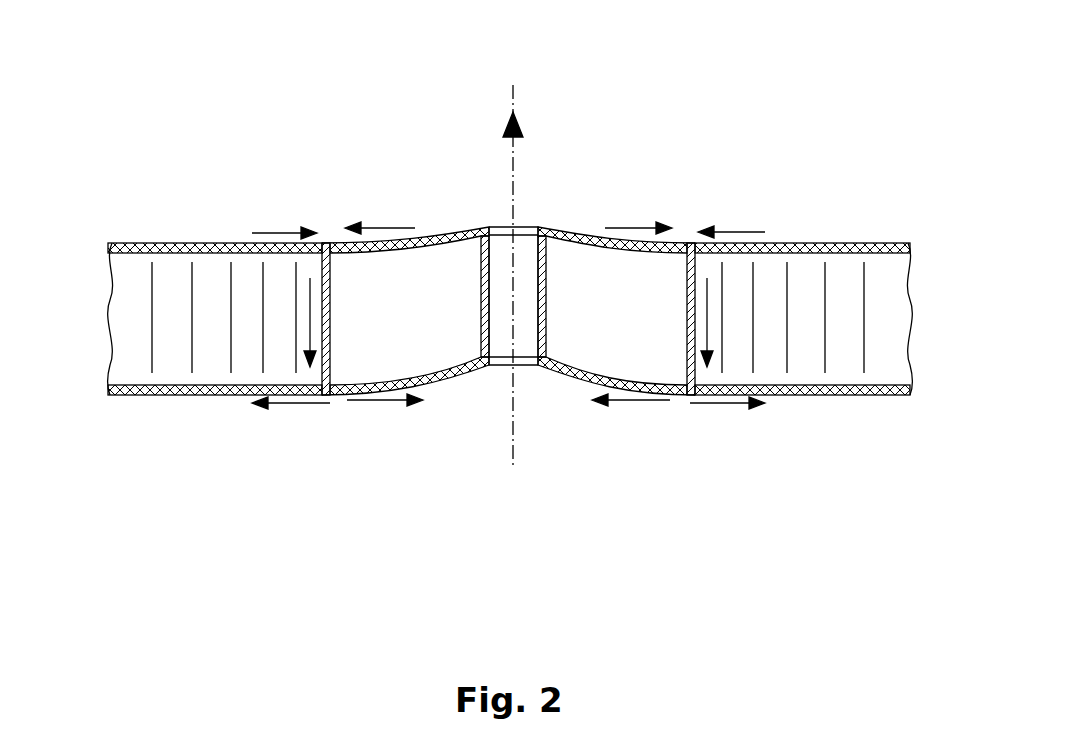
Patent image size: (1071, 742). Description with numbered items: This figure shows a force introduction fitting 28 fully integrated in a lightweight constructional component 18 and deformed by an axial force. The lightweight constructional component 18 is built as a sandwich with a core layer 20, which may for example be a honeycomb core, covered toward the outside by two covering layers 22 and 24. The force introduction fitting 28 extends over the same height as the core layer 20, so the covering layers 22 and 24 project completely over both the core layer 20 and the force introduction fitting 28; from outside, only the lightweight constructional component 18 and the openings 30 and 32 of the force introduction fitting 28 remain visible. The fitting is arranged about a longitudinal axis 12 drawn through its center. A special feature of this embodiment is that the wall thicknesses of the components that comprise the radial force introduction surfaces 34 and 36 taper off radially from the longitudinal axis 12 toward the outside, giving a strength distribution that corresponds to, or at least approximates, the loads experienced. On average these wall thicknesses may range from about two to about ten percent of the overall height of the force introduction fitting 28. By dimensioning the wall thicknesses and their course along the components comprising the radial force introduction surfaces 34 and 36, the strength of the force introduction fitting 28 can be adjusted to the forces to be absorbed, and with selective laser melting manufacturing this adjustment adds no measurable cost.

The longitudinal axis 12 is at (512, 186).
The lightweight constructional component 18 is at (197, 310).
The core layer 20 is at (178, 350).
The covering layer 22 is at (208, 396).
The covering layer 24 is at (222, 243).
The force introduction fitting 28 is at (725, 219).
The opening 30 is at (528, 212).
The opening 32 is at (540, 392).
The radial force introduction surface 34 is at (583, 237).
The radial force introduction surface 36 is at (462, 373).